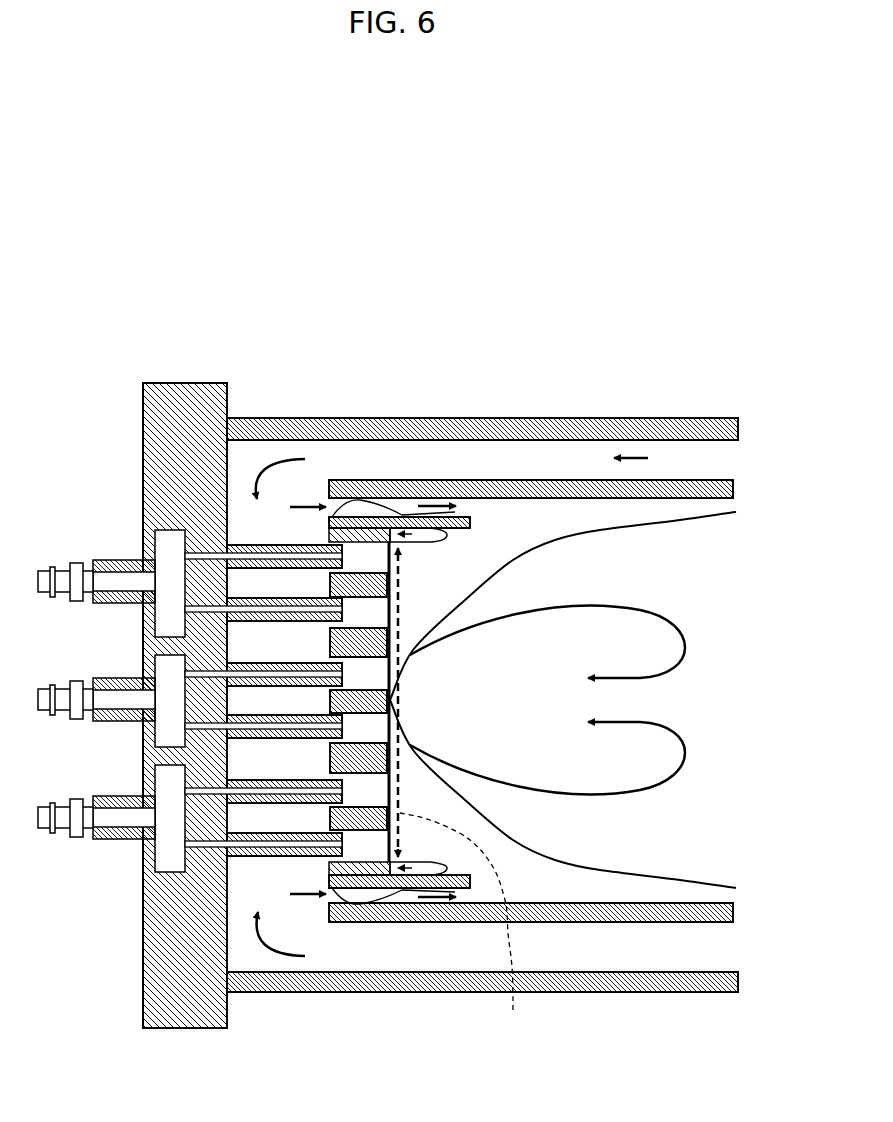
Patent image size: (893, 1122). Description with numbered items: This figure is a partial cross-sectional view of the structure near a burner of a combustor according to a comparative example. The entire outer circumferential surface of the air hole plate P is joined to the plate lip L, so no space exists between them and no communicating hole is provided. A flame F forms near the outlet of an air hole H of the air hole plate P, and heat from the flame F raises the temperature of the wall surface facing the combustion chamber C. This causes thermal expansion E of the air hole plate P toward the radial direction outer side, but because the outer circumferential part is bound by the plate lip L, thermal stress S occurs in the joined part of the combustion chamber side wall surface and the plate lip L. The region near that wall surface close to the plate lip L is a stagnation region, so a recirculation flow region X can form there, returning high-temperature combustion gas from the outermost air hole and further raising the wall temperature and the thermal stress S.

The thermal stress S is at (383, 515).
The plate lip L is at (468, 520).
The recirculation flow region X is at (403, 537).
The air hole plate P is at (330, 763).
The air hole H is at (368, 773).
The combustion chamber C is at (528, 894).
The thermal expansion E is at (460, 927).
The flame F is at (687, 878).